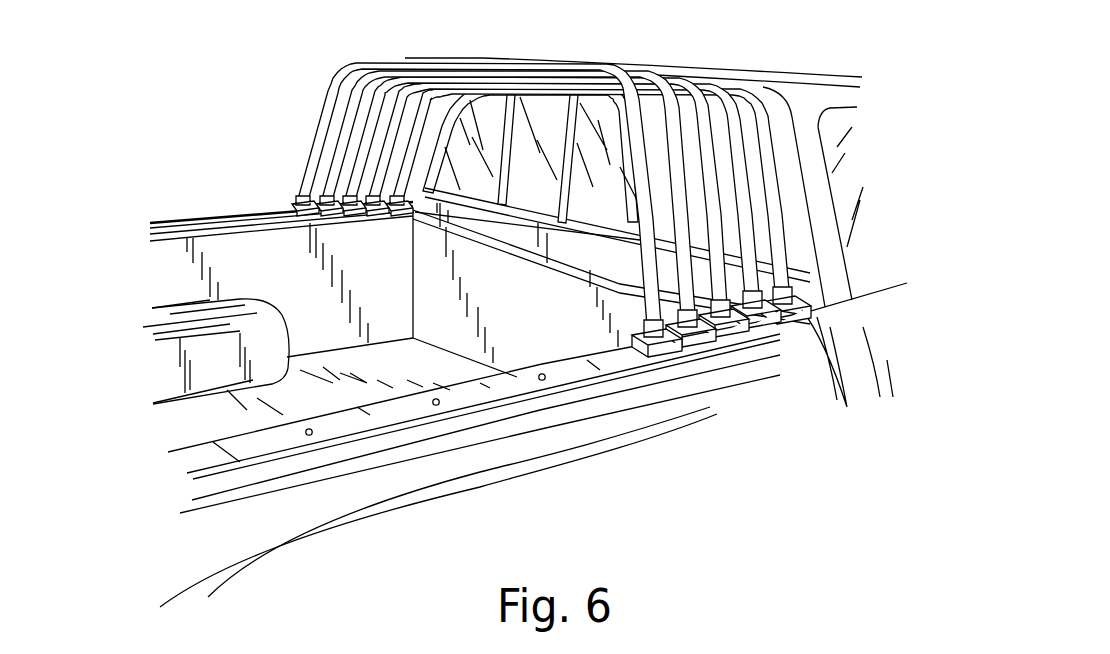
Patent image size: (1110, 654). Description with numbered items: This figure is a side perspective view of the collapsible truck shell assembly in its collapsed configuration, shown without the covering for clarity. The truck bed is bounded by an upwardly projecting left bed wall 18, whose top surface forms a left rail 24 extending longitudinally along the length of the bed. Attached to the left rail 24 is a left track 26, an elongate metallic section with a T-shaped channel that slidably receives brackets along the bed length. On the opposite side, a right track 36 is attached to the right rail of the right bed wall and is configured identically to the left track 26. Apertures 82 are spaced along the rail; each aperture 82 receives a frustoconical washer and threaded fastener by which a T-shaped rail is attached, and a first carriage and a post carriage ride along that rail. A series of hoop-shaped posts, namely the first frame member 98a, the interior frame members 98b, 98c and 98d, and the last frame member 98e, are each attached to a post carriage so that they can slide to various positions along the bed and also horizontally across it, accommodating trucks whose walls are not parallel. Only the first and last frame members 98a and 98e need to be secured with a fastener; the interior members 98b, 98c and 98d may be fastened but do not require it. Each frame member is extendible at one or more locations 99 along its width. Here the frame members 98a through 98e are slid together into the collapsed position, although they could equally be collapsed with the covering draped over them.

The left bed wall 18 is at (177, 270).
The left rail 24 is at (213, 232).
The left track 26 is at (248, 218).
The right track 36 is at (334, 443).
The apertures 82 is at (307, 434).
The first frame member 98a is at (653, 303).
The interior frame member 98b is at (696, 290).
The interior frame member 98c is at (727, 285).
The interior frame member 98d is at (753, 282).
The last frame member 98e is at (783, 274).
The extendible location 99 is at (484, 64).